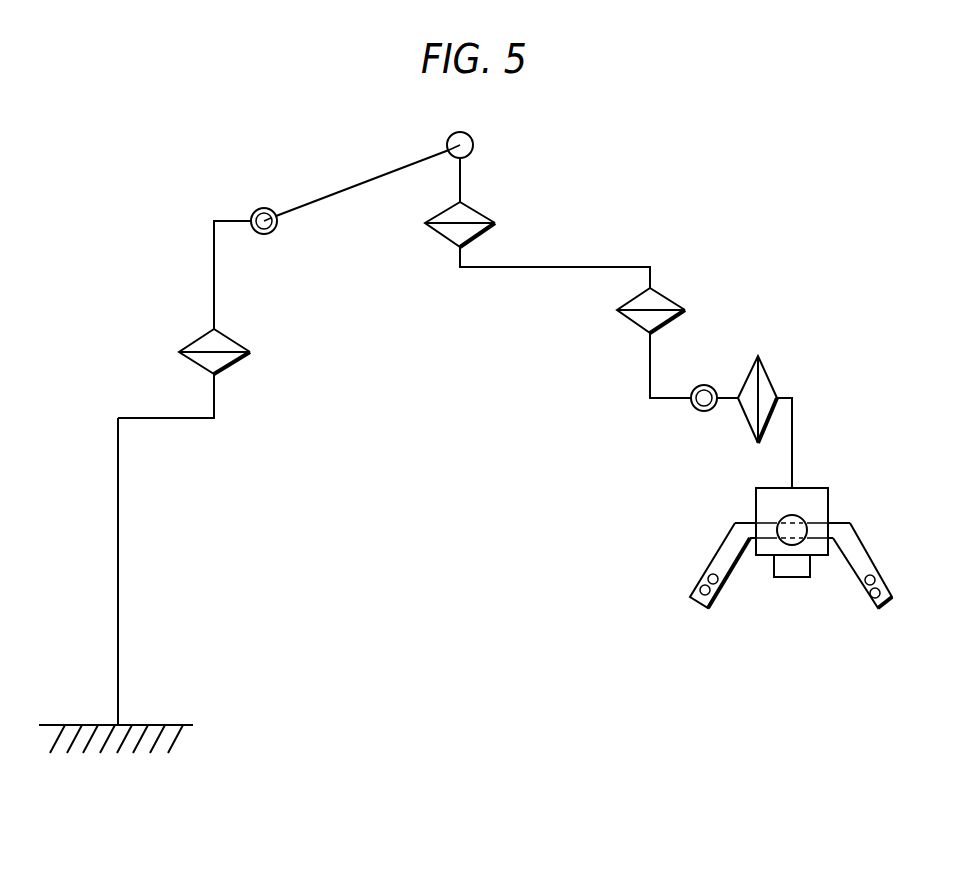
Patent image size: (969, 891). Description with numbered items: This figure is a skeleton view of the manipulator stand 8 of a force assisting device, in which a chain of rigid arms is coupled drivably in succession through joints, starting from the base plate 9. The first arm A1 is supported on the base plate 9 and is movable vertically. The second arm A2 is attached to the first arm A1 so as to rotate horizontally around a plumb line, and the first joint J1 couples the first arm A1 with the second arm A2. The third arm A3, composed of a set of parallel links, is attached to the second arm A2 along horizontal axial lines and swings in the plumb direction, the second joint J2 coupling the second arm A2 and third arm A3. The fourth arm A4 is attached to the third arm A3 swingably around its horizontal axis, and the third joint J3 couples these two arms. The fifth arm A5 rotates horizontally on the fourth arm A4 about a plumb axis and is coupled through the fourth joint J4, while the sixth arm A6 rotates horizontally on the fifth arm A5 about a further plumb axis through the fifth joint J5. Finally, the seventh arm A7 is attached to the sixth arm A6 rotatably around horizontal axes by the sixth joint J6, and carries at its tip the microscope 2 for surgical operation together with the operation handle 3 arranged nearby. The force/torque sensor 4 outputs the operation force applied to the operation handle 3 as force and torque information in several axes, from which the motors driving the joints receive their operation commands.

The base plate 9 is at (120, 588).
The first arm A1 is at (186, 420).
The first joint J1 is at (226, 362).
The second arm A2 is at (216, 283).
The second joint J2 is at (262, 207).
The third arm A3 is at (343, 196).
The third joint J3 is at (474, 143).
The fourth arm A4 is at (462, 183).
The fourth joint J4 is at (472, 233).
The fifth arm A5 is at (536, 269).
The fifth joint J5 is at (655, 300).
The sixth arm A6 is at (652, 368).
The sixth joint J6 is at (682, 428).
The seventh arm A7 is at (795, 412).
The force/torque sensor 4 is at (797, 525).
The operation handle 3 is at (862, 556).
The microscope 2 is at (799, 578).
The manipulator stand 8 is at (419, 426).